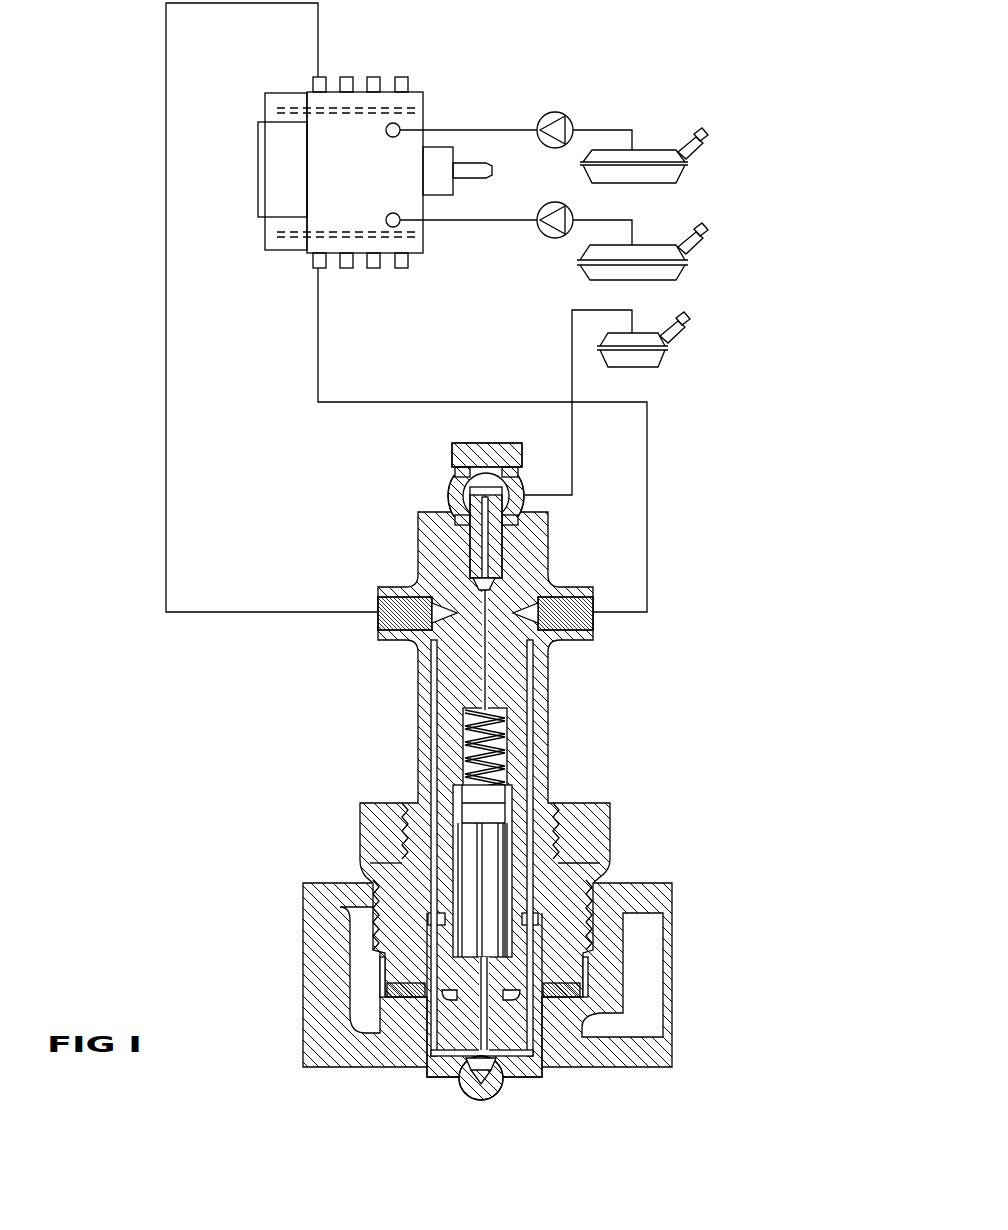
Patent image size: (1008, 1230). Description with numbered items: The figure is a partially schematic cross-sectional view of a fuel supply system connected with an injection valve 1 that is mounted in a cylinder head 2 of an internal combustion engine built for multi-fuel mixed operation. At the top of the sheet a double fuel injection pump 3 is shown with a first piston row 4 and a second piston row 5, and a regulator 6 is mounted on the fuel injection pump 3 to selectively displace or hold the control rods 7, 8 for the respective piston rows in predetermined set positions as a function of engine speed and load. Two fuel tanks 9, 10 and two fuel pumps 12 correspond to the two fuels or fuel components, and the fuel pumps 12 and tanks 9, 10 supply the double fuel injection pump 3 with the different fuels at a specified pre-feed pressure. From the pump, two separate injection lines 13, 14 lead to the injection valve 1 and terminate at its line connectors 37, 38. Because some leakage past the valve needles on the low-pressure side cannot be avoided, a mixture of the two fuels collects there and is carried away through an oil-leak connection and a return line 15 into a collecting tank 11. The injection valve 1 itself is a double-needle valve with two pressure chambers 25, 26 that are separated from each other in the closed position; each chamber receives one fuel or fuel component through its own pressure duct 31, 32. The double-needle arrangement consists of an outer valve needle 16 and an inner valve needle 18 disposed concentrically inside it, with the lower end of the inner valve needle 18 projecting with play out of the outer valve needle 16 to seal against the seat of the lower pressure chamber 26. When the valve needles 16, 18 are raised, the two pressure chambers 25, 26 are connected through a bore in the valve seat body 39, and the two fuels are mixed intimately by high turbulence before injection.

The injection valve 1 is at (487, 791).
The cylinder head 2 is at (638, 898).
The double fuel injection pump 3 is at (374, 171).
The first piston row 4 is at (350, 128).
The second piston row 5 is at (341, 222).
The regulator 6 is at (265, 168).
The control rod 7 is at (386, 106).
The control rod 8 is at (384, 238).
The fuel tank 9 is at (653, 156).
The fuel tank 10 is at (643, 270).
The collecting tank 11 is at (655, 366).
The fuel pumps 12 is at (537, 205).
The injection line 13 is at (166, 340).
The injection line 14 is at (362, 402).
The return line 15 is at (570, 472).
The outer valve needle 16 is at (468, 848).
The inner valve needle 18 is at (490, 1064).
The pressure chamber 25 is at (450, 998).
The pressure chamber 26 is at (470, 1090).
The pressure duct 31 is at (438, 727).
The pressure duct 32 is at (532, 707).
The line connector 37 is at (377, 610).
The line connector 38 is at (593, 621).
The valve seat body 39 is at (442, 1063).